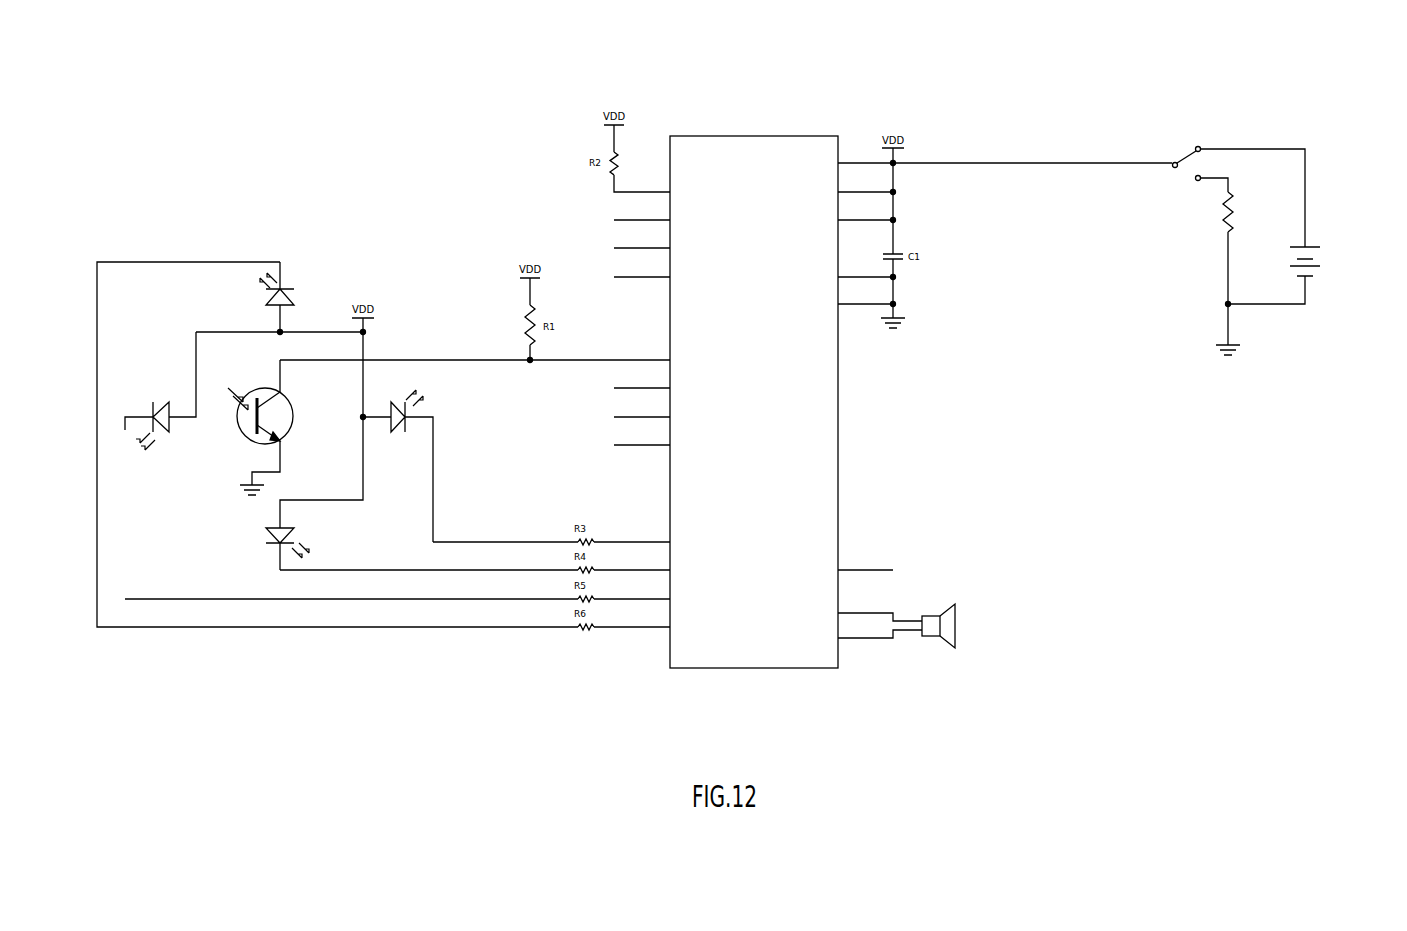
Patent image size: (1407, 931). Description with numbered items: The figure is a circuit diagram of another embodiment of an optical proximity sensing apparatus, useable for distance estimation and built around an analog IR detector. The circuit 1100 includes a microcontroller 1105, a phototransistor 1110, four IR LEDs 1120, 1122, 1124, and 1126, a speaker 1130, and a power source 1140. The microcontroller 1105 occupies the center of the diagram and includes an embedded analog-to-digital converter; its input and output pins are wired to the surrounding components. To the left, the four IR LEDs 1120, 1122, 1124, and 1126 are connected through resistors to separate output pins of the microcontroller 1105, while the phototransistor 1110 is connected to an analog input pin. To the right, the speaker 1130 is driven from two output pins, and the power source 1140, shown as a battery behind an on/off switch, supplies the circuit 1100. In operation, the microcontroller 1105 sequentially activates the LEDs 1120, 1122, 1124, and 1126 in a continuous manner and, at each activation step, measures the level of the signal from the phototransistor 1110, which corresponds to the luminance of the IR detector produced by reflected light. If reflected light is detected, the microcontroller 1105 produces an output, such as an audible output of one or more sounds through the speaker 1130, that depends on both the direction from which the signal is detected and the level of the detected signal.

The circuit 1100 is at (1313, 122).
The microcontroller 1105 is at (839, 462).
The phototransistor 1110 is at (226, 442).
The IR LED 1120 is at (134, 386).
The IR LED 1122 is at (300, 286).
The IR LED 1124 is at (396, 444).
The IR LED 1126 is at (262, 548).
The speaker 1130 is at (966, 606).
The power source 1140 is at (1319, 236).